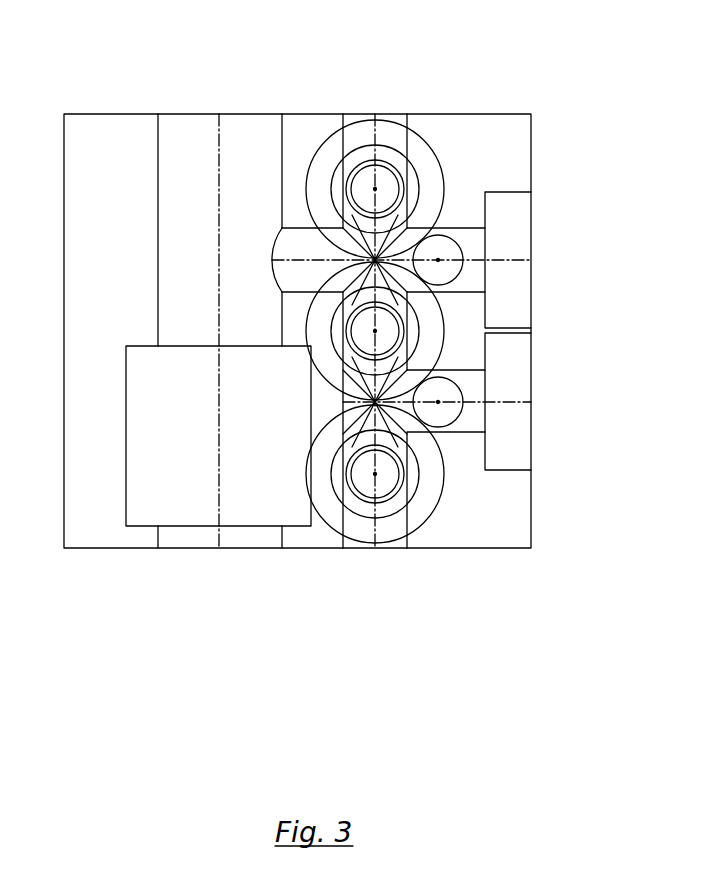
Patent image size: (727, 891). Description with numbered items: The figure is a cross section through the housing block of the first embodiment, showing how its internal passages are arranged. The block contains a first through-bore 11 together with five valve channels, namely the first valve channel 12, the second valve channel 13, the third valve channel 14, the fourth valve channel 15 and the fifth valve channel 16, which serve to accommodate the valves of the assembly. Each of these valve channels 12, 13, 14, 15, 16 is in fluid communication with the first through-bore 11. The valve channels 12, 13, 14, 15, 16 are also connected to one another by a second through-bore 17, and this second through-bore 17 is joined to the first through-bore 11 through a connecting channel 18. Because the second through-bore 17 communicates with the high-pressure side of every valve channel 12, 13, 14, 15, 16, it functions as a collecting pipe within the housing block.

The first through-bore 11 is at (272, 331).
The first valve channel 12 is at (468, 468).
The second valve channel 13 is at (507, 384).
The third valve channel 14 is at (466, 311).
The fourth valve channel 15 is at (514, 226).
The fifth valve channel 16 is at (424, 147).
The second through-bore 17 is at (383, 298).
The connecting channel 18 is at (268, 292).